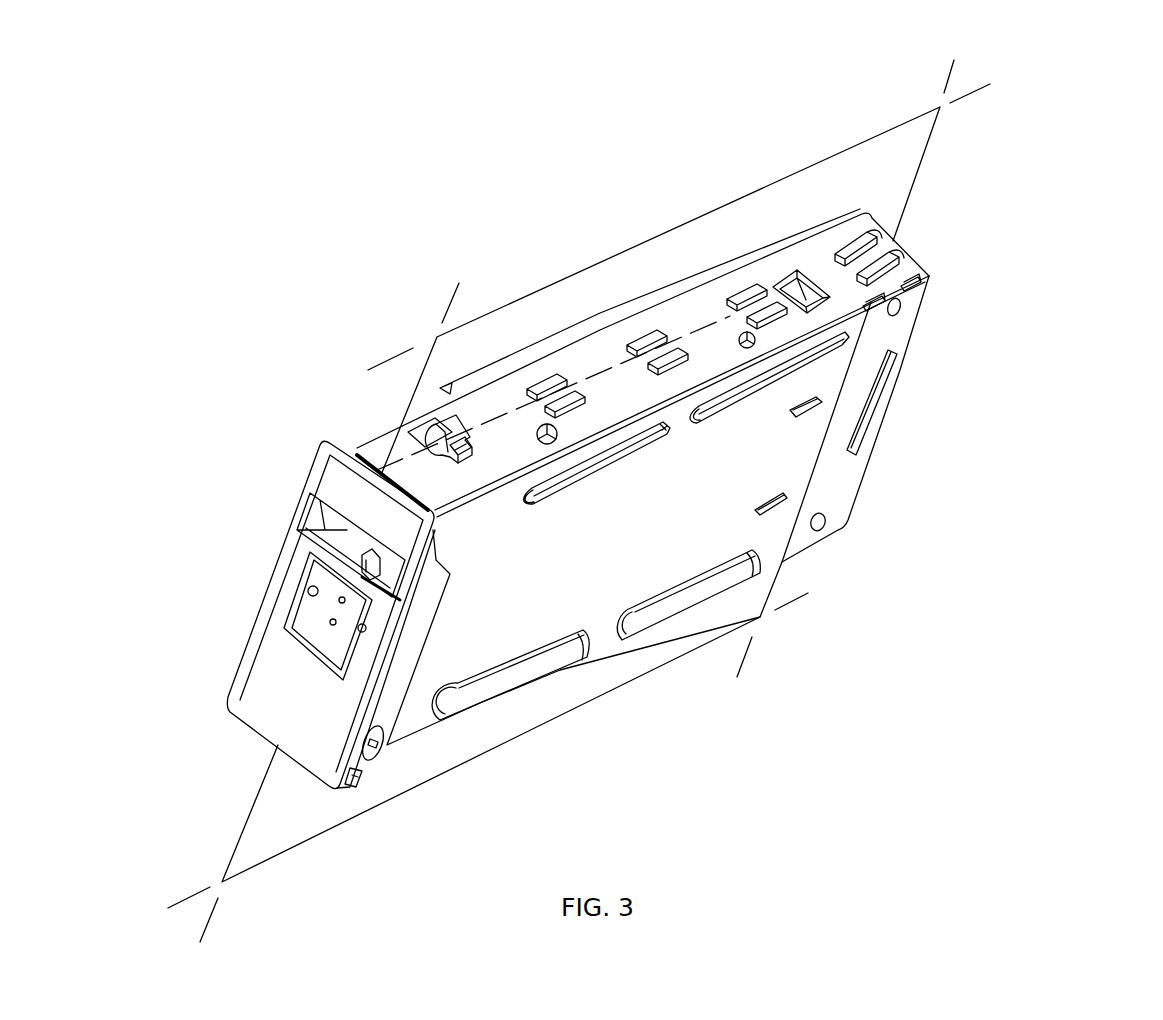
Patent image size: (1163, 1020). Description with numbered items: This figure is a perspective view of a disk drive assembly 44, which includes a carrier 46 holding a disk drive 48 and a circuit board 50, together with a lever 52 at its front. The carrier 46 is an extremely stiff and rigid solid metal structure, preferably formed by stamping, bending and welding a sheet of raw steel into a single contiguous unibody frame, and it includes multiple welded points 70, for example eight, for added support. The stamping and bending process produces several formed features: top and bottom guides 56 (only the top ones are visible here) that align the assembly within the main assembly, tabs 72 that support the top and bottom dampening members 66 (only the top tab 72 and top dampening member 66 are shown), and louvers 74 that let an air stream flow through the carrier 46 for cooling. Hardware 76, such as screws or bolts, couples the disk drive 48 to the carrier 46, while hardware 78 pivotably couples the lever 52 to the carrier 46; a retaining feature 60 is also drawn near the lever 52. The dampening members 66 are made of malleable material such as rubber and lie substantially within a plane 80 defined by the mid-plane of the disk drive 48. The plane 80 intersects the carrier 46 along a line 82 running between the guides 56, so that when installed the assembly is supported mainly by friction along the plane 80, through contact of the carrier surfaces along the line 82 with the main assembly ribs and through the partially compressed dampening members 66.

The disk drive assembly 44 is at (740, 443).
The carrier 46 is at (634, 548).
The disk drive 48 is at (723, 267).
The circuit board 50 is at (943, 307).
The lever 52 is at (243, 708).
The top and bottom guides 56 is at (638, 337).
The retaining rib 60 is at (367, 775).
The top and bottom dampening members 66 is at (440, 442).
The welded points 70 is at (920, 282).
The tabs 72 is at (472, 448).
The louvers 74 is at (722, 580).
The hardware 76 is at (557, 432).
The hardware 78 is at (388, 732).
The plane 80 is at (867, 158).
The line 82 is at (822, 268).